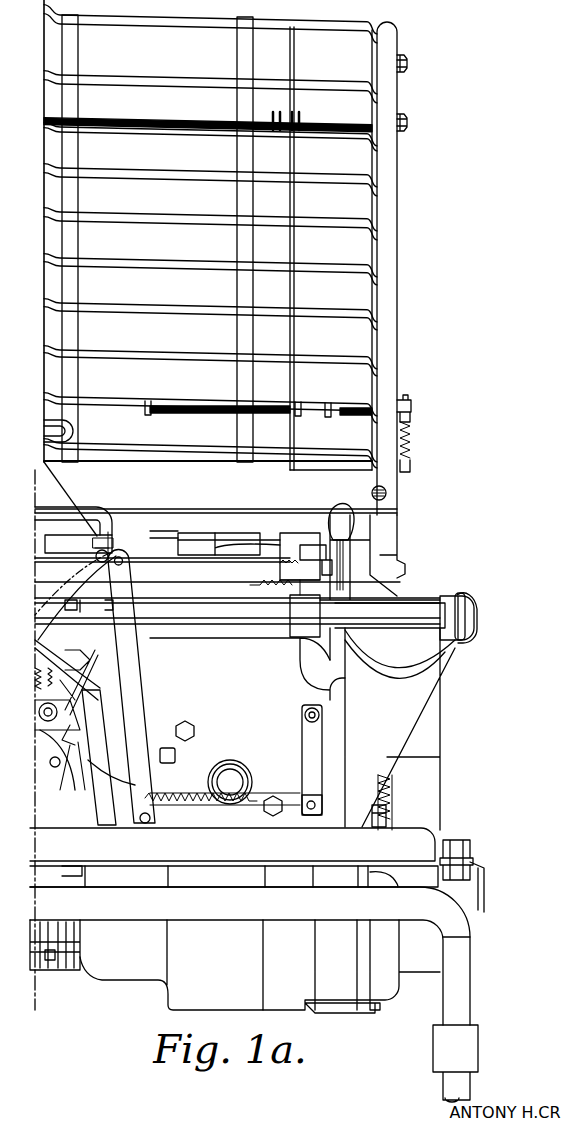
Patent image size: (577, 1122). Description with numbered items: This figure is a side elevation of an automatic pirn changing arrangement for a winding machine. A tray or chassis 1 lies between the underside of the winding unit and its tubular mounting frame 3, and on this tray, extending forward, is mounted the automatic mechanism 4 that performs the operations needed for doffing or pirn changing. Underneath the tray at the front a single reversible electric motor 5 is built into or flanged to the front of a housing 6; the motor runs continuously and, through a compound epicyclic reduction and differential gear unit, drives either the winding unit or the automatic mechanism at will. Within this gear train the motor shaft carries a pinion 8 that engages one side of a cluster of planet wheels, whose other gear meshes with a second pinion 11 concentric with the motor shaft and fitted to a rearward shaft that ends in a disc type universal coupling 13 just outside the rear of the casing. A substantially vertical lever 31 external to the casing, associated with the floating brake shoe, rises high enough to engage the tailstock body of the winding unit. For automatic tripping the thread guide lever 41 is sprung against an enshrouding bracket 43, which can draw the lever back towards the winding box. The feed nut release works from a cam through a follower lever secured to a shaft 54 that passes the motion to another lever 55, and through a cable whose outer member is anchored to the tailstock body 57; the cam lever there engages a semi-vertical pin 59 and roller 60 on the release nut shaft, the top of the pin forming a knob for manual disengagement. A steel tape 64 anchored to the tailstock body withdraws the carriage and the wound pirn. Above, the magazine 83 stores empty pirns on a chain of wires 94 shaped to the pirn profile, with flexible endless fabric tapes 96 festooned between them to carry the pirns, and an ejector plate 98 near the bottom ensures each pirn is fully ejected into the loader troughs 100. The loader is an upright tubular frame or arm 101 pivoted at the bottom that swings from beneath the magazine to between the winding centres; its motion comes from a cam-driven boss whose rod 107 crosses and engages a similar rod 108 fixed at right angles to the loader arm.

The tray or chassis 1 is at (125, 852).
The tubular mounting frame 3 is at (218, 912).
The automatic mechanism 4 is at (242, 738).
The reversible electric motor 5 is at (336, 990).
The housing 6 is at (107, 968).
The pinion 8 is at (232, 737).
The pinion 11 is at (100, 460).
The disc type universal coupling 13 is at (50, 962).
The vertical lever 31 is at (135, 657).
The thread guide lever 41 is at (167, 733).
The enshrouding bracket 43 is at (143, 705).
The shaft 54 is at (320, 715).
The lever 55 is at (318, 755).
The tailstock body 57 is at (285, 530).
The semi-vertical pin 59 is at (338, 515).
The roller 60 is at (345, 540).
The steel tape 64 is at (411, 602).
The magazine 83 is at (388, 255).
The wires 94 is at (153, 262).
The flexible endless fabric tapes 96 is at (70, 191).
The ejector plate 98 is at (130, 428).
The loader troughs 100 is at (205, 548).
The upright tubular frame or arm 101 is at (352, 657).
The rod 107 is at (392, 800).
The rod 108 is at (395, 812).